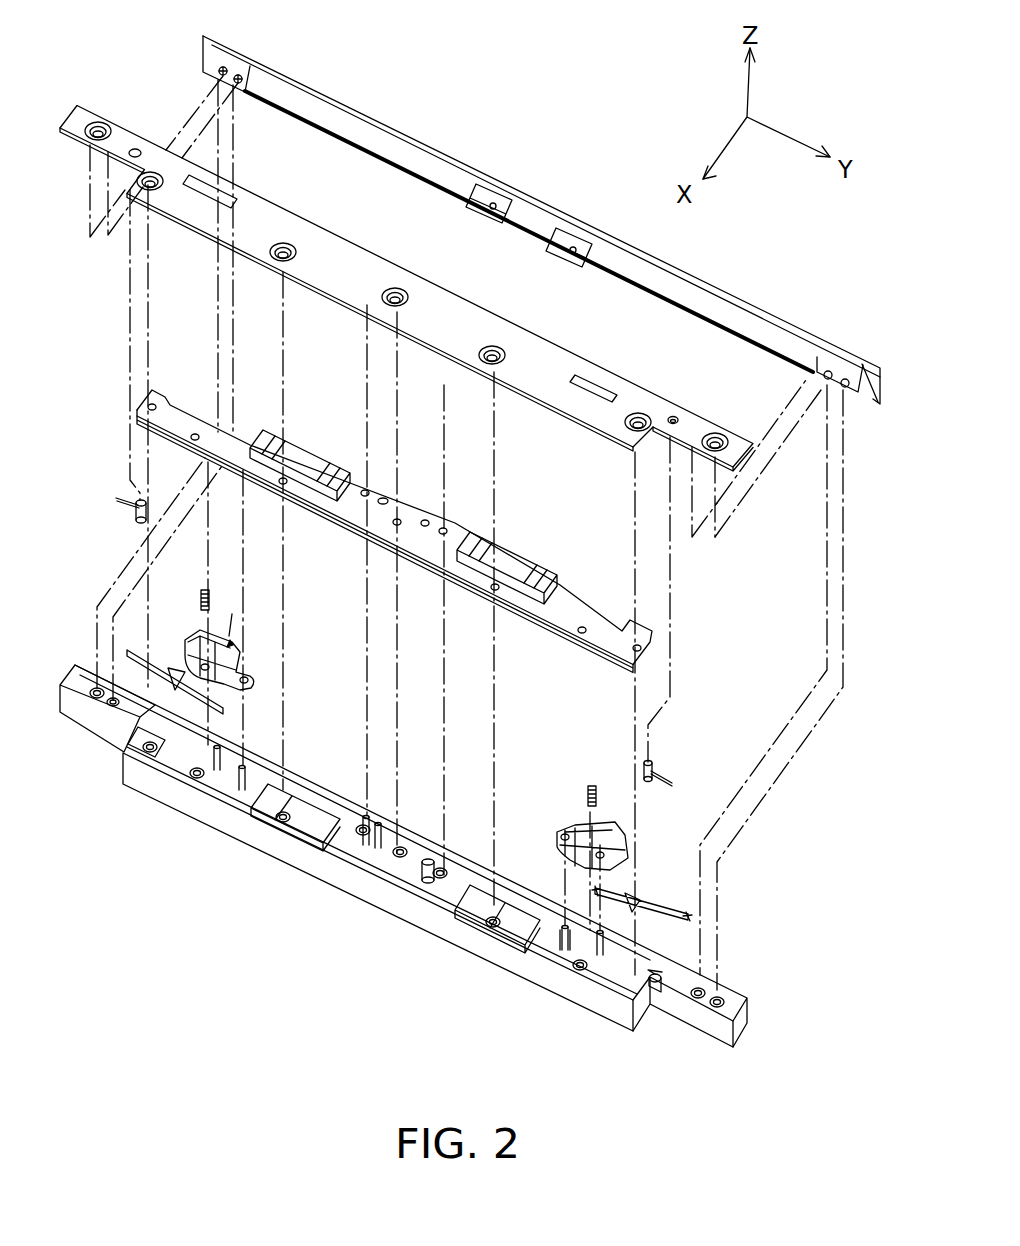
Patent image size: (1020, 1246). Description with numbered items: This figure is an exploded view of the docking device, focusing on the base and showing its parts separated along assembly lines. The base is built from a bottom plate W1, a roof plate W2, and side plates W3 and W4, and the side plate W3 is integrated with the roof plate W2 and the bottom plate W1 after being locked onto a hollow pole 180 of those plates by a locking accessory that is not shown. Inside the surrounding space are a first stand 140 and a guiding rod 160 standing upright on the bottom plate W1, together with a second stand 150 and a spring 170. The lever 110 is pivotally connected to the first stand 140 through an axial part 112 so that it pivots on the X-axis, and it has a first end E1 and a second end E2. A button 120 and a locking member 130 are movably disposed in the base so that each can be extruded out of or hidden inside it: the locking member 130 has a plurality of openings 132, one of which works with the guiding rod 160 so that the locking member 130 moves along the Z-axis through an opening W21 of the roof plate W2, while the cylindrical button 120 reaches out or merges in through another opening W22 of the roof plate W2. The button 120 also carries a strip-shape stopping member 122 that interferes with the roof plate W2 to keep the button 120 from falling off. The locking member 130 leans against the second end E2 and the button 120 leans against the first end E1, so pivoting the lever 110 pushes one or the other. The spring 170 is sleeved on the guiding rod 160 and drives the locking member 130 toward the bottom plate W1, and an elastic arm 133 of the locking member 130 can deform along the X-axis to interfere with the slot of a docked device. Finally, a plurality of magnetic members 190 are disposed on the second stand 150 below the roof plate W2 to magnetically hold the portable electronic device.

The bottom plate W1 is at (617, 975).
The roof plate W2 is at (86, 112).
The side plate W3 is at (717, 291).
The side plate W4 is at (505, 953).
The opening W21 is at (672, 421).
The opening W22 is at (596, 388).
The lever 110 is at (640, 903).
The axial part 112 is at (668, 905).
The button 120 is at (138, 504).
The strip-shape stopping member 122 is at (130, 507).
The locking member 130 is at (192, 633).
The openings 132 is at (247, 679).
The elastic arm 133 is at (227, 617).
The first stand 140 is at (658, 978).
The second stand 150 is at (197, 413).
The guiding rod 160 is at (565, 976).
The spring 170 is at (206, 586).
The hollow pole 180 is at (448, 865).
The magnetic members 190 is at (305, 457).
The first end E1 is at (690, 908).
The second end E2 is at (593, 893).